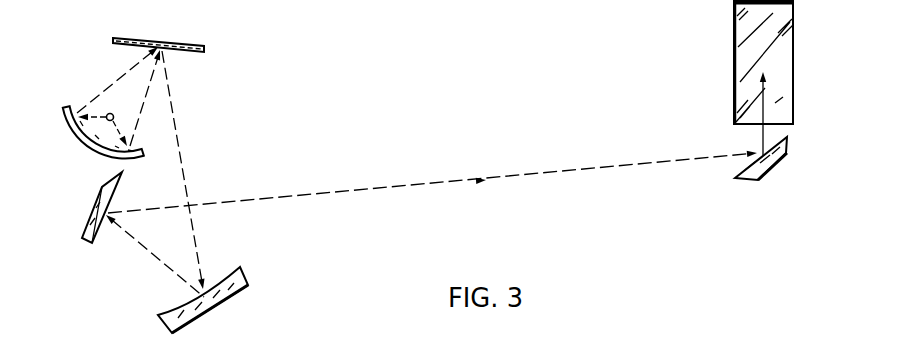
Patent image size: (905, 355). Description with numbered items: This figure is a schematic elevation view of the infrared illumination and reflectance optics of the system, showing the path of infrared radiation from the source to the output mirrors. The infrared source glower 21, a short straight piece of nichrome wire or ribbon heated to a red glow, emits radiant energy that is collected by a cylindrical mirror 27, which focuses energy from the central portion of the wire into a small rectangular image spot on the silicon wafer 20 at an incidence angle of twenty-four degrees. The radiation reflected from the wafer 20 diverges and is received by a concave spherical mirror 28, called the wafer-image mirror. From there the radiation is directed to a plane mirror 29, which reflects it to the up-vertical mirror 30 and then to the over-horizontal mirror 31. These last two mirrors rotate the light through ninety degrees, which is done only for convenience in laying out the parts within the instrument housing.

The silicon wafer 20 is at (187, 38).
The infrared source glower 21 is at (108, 113).
The cylindrical mirror 27 is at (76, 137).
The concave spherical mirror 28 is at (245, 279).
The plane mirror 29 is at (95, 213).
The up-vertical mirror 30 is at (787, 152).
The over-horizontal mirror 31 is at (735, 33).